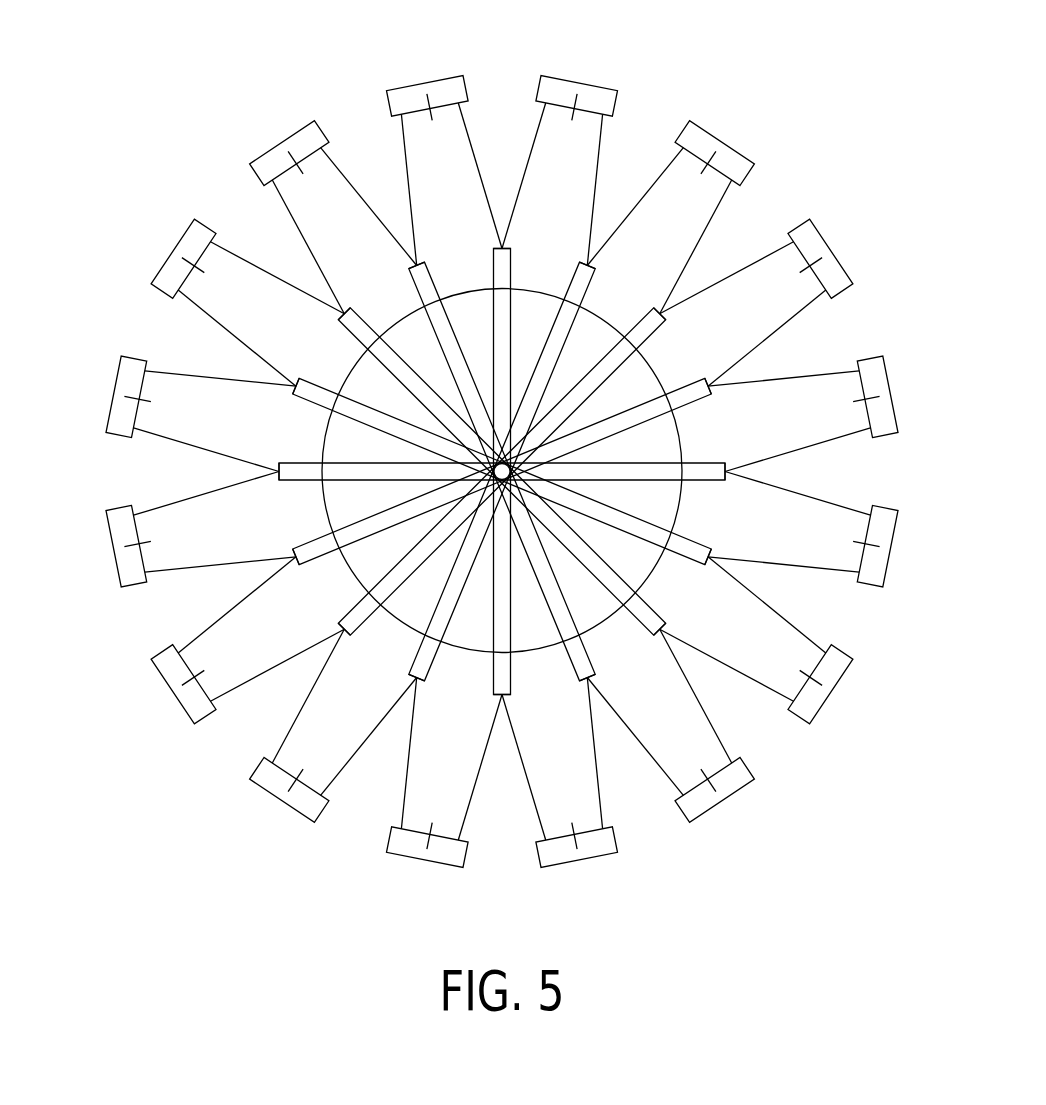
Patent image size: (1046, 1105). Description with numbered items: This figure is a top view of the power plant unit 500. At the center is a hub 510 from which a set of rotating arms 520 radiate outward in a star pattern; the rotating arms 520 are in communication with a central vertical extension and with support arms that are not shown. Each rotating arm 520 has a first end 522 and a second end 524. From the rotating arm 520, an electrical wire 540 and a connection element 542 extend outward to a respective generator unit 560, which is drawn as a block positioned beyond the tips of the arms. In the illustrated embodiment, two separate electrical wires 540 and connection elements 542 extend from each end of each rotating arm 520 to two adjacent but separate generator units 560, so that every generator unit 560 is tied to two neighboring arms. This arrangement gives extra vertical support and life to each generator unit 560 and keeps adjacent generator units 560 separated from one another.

The power plant unit 500 is at (206, 878).
The hub 510 is at (509, 466).
The rotating arm 520 is at (440, 294).
The first end 522 is at (502, 246).
The second end 524 is at (589, 263).
The electrical wire 540 is at (853, 433).
The connection element 542 is at (502, 471).
The generator unit 560 is at (892, 394).